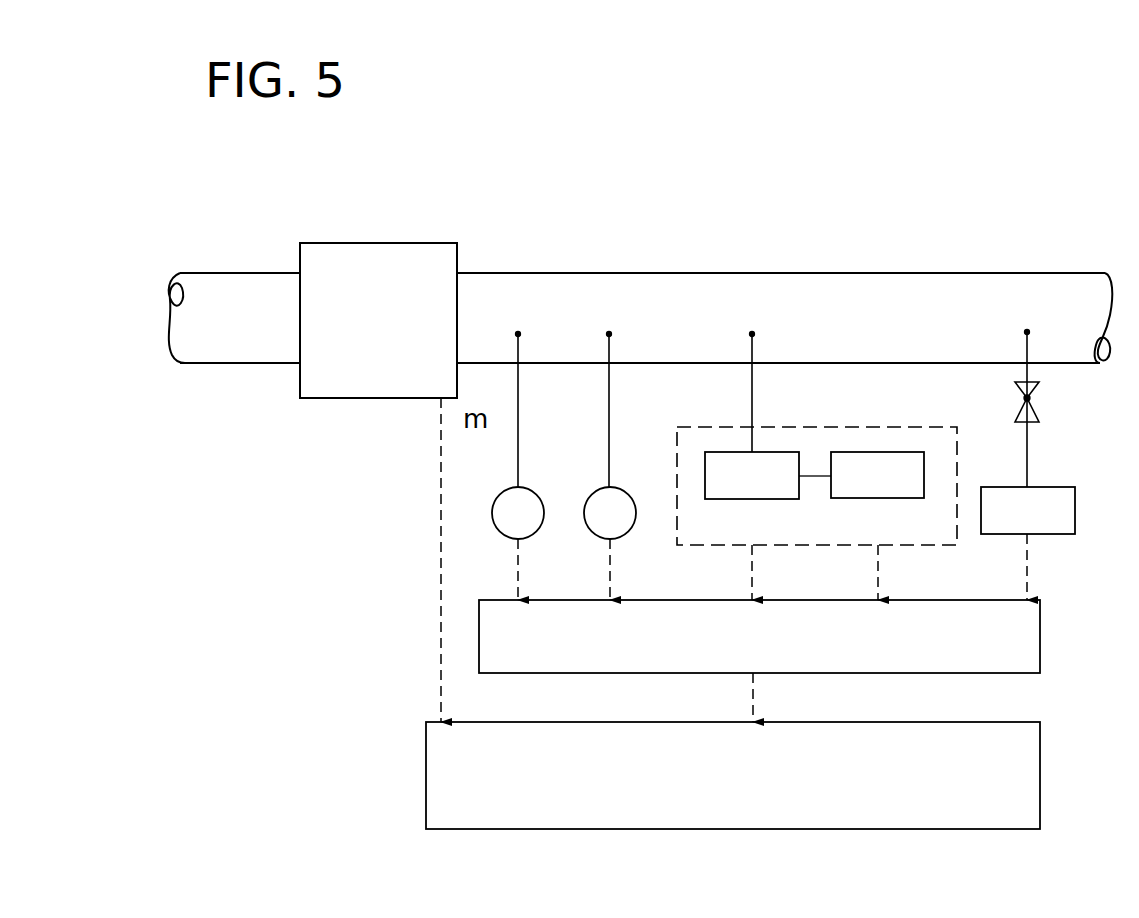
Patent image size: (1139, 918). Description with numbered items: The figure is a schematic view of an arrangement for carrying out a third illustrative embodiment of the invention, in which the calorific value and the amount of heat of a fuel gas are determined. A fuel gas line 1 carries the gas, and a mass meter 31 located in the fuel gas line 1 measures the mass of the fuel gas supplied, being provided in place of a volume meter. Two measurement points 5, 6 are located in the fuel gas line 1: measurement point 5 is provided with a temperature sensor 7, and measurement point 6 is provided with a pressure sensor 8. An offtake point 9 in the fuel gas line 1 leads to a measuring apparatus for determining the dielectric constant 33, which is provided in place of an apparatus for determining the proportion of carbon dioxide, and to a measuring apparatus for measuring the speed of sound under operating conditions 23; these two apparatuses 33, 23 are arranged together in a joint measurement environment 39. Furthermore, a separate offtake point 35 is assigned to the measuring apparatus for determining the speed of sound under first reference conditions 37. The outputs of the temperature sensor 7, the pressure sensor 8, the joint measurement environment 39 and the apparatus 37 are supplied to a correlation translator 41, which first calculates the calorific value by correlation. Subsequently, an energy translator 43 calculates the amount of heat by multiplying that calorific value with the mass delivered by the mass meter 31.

The fuel gas line 1 is at (245, 290).
The mass meter 31 is at (415, 257).
The measurement point 5 is at (518, 334).
The measurement point 6 is at (609, 334).
The offtake point 9 is at (752, 334).
The separate offtake point 35 is at (1027, 332).
The temperature sensor 7 is at (535, 490).
The pressure sensor 8 is at (628, 490).
The measuring apparatus for determining the dielectric constant 33 is at (765, 452).
The measuring apparatus for measuring the speed of sound under operating conditions 23 is at (855, 452).
The joint measurement environment 39 is at (930, 535).
The measuring apparatus for determining the speed of sound under first reference con 37 is at (1063, 534).
The correlation translator 41 is at (1040, 638).
The energy translator 43 is at (1040, 752).